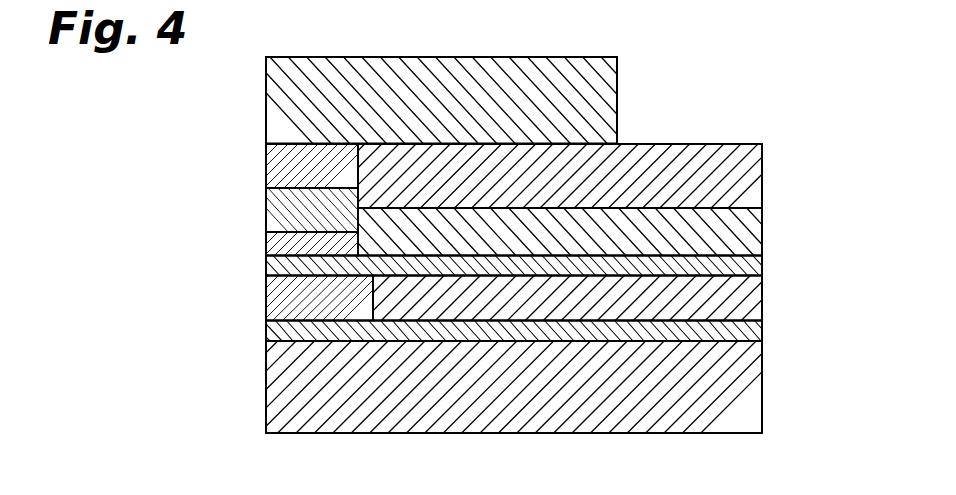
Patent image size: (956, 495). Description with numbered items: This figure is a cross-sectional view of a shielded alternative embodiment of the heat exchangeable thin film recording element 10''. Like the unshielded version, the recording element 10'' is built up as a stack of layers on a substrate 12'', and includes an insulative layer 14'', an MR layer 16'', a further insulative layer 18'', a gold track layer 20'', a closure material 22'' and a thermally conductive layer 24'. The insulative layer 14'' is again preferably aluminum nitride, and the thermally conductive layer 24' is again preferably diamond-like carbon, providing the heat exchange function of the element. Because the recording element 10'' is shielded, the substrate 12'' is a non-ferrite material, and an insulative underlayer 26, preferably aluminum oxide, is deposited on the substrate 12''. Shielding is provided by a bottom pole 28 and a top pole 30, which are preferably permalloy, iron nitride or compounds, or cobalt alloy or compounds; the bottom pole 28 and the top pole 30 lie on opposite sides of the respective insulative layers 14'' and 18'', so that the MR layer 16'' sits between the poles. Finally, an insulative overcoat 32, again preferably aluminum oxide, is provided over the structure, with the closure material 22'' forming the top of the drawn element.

The heat exchangeable thin film recording element 10'' is at (553, 229).
The substrate 12'' is at (567, 387).
The insulative layer 14'' is at (567, 258).
The MR layer 16'' is at (256, 249).
The insulative layer 18'' is at (256, 210).
The gold track layer 20'' is at (613, 232).
The closure material 22'' is at (492, 100).
The thermally conductive layer 24' is at (617, 298).
The insulative underlayer 26 is at (733, 331).
The bottom pole 28 is at (283, 306).
The top pole 30 is at (283, 165).
The insulative overcoat 32 is at (730, 168).